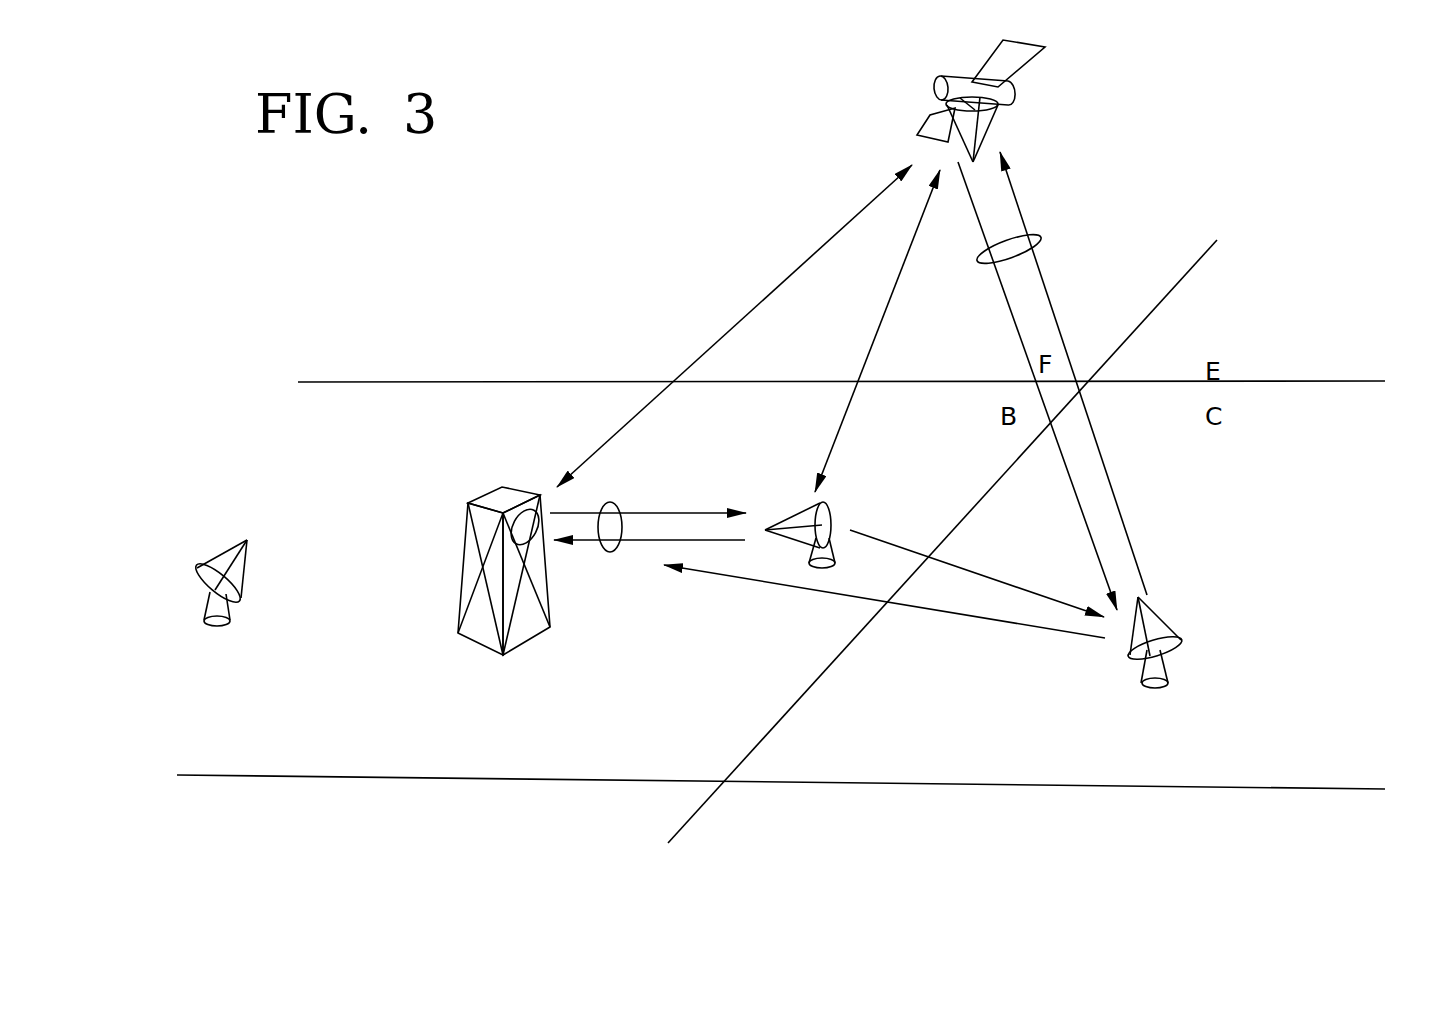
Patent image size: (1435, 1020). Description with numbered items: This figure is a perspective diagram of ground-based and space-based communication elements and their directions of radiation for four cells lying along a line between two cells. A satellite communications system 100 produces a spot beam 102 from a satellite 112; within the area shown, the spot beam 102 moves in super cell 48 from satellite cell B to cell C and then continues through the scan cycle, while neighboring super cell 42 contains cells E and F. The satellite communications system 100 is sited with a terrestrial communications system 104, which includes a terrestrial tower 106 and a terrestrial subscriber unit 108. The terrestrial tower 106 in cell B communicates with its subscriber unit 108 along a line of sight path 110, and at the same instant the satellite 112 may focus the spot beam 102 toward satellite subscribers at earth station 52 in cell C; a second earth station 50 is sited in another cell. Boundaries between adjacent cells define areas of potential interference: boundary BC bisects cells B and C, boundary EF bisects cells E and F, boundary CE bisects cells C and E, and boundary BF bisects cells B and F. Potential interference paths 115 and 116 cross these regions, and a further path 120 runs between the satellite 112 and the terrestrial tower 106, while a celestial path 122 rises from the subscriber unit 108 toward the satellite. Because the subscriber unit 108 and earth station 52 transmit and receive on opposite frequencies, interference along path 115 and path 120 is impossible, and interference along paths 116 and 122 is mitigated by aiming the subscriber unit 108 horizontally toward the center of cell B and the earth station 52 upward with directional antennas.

The satellite super cell 42 is at (542, 269).
The satellite super cell 48 is at (234, 455).
The satellite earth station 50 is at (198, 632).
The satellite earth station 52 is at (1177, 682).
The satellite communications system 100 is at (991, 108).
The spot beam 102 is at (1043, 238).
The terrestrial communications system 104 is at (670, 675).
The terrestrial tower 106 is at (447, 524).
The terrestrial subscriber unit 108 is at (806, 589).
The line of sight path 110 is at (610, 561).
The satellite 112 is at (1028, 92).
The potential interference path 115 is at (975, 570).
The potential interference path 116 is at (950, 615).
The path 120 is at (763, 300).
The celestial path 122 is at (875, 353).
The boundary BF is at (390, 380).
The boundary BC is at (822, 675).
The boundary CE is at (1380, 388).
The boundary EF is at (1186, 276).